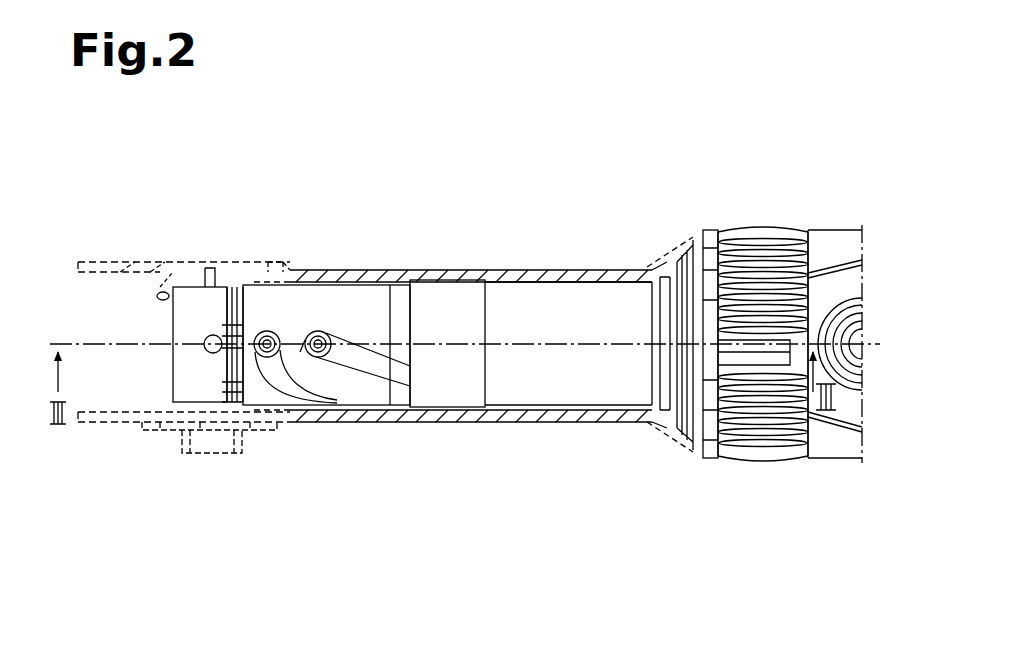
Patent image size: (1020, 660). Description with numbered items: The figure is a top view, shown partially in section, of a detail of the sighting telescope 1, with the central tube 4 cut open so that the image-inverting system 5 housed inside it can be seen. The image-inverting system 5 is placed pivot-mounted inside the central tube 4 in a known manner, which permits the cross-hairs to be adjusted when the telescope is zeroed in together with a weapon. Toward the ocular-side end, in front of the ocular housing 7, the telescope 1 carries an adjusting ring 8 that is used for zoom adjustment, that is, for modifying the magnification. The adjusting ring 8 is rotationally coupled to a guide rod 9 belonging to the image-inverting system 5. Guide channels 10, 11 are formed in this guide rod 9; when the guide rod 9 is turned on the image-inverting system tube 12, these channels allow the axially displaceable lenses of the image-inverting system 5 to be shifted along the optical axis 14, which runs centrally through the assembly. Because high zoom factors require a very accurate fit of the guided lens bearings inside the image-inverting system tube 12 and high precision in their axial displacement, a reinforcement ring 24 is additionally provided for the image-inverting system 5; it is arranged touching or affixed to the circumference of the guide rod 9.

The sighting telescope 1 is at (550, 167).
The central tube 4 is at (392, 425).
The image-inverting system 5 is at (410, 255).
The ocular housing 7 is at (833, 473).
The adjusting ring 8 is at (757, 213).
The guide rod 9 is at (565, 308).
The guide channel 10 is at (265, 395).
The guide channel 11 is at (358, 378).
The image-inverting system tube 12 is at (173, 268).
The optical axis 14 is at (134, 340).
The reinforcement ring 24 is at (490, 372).